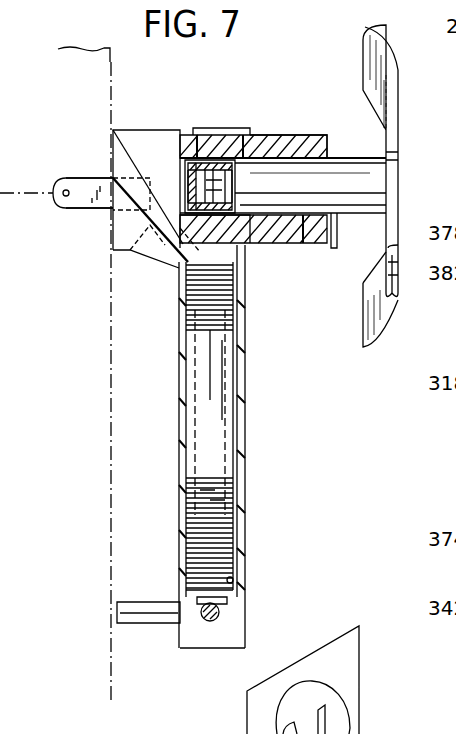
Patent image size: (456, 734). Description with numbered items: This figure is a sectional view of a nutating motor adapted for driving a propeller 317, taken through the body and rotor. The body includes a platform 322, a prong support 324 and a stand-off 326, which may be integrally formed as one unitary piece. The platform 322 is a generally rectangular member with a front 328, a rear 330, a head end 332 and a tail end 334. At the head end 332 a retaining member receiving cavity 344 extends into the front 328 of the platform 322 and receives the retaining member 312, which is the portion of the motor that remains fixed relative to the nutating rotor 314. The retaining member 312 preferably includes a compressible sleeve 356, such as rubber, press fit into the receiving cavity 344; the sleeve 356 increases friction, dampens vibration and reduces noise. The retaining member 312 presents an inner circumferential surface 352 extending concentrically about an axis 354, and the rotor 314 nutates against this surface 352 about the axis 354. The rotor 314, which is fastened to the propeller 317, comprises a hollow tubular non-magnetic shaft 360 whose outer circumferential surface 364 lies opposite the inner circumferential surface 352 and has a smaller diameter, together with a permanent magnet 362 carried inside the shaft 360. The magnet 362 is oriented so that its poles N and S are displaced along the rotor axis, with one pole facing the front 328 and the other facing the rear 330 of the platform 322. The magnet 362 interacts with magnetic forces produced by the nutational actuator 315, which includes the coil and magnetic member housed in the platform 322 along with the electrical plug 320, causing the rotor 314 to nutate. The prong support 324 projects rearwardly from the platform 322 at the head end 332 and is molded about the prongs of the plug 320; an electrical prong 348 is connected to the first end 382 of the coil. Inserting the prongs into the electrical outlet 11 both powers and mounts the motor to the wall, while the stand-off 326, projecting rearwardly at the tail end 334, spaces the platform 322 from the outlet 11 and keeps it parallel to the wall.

The electrical outlet 11 is at (114, 86).
The axis 354 is at (28, 170).
The electrical plug 320 is at (80, 177).
The electrical prong 348 is at (88, 210).
The first end of coil 382 is at (113, 240).
The prong support 324 is at (138, 251).
The retaining member receiving cavity 344 is at (206, 134).
The head end 332 is at (234, 126).
The retaining member 312 is at (300, 134).
The rotor 314 is at (355, 156).
The magnet 362 is at (168, 131).
The south pole S is at (190, 190).
The north pole N is at (240, 185).
The inner circumferential surface 352 is at (305, 244).
The sleeve 356 is at (255, 240).
The outer circumferential surface 364 is at (322, 244).
The shaft 360 is at (356, 216).
The propeller 317 is at (400, 126).
The rear 330 is at (174, 403).
The nutational actuator 315 is at (251, 405).
The platform 322 is at (180, 455).
The front 328 is at (250, 455).
The stand-off 326 is at (150, 624).
The tail end 334 is at (210, 657).